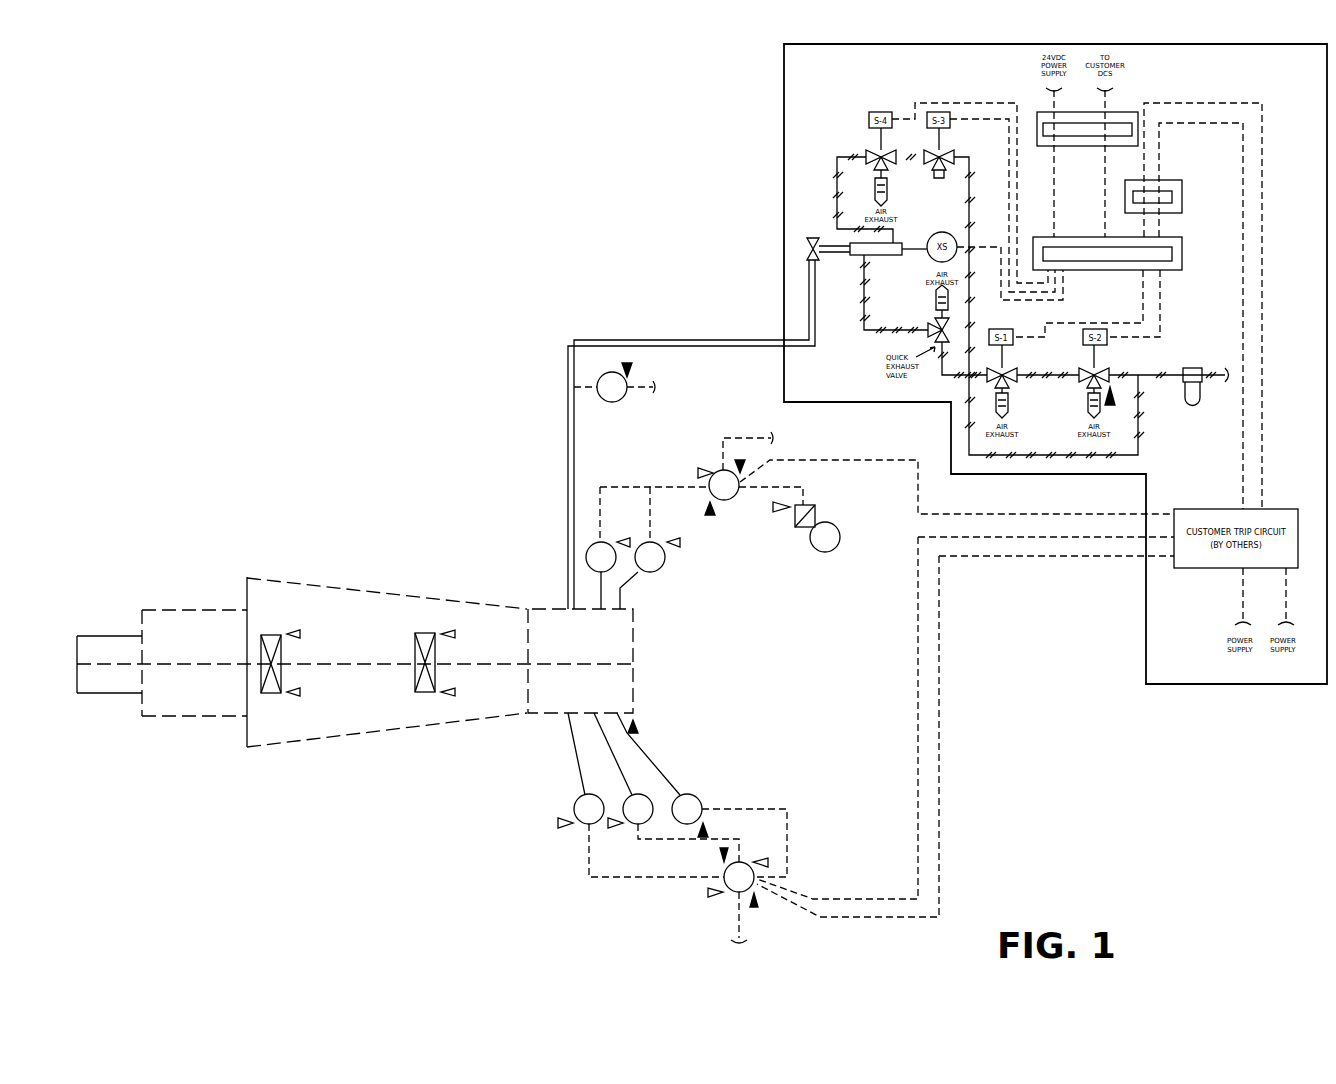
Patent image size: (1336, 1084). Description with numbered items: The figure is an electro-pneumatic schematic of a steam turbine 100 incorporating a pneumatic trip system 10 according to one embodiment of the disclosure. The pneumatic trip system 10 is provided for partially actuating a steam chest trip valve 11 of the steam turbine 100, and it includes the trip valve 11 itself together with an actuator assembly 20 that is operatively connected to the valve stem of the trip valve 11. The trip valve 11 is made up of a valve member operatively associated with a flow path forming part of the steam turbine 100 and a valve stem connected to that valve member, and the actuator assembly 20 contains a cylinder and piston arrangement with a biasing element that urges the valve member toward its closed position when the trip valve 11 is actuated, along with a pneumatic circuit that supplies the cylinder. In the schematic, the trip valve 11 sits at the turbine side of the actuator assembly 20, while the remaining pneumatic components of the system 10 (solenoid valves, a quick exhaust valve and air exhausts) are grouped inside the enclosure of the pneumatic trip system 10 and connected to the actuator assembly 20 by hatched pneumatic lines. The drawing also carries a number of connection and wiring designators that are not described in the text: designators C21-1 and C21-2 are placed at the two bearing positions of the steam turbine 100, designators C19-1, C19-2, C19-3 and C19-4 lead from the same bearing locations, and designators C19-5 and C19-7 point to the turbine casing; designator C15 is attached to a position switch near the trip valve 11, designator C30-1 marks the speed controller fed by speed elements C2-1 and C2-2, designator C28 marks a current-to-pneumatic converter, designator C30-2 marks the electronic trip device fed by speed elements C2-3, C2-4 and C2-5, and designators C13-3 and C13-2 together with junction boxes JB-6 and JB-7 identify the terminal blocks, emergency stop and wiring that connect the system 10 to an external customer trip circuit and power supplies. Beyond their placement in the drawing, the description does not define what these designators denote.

The pneumatic trip system 10 is at (784, 72).
The actuator assembly 20 is at (850, 245).
The trip valve 11 is at (812, 236).
The steam turbine 100 is at (388, 593).
The bearing vibration sensor connection C21-1 is at (427, 633).
The bearing vibration sensor connection C21-2 is at (270, 635).
The bearing temperature sensor connection C19-1 is at (426, 692).
The bearing temperature sensor connection C19-2 is at (423, 692).
The bearing temperature sensor connection C19-3 is at (275, 693).
The bearing temperature sensor connection C19-4 is at (268, 693).
The turbine casing sensor connection C19-5 is at (635, 695).
The turbine casing sensor connection C19-7 is at (668, 754).
The valve position switch connection C15 is at (627, 383).
The speed indicating controller connection C30-1 is at (723, 472).
The speed element connection C2-1 is at (600, 543).
The speed element connection C2-2 is at (650, 543).
The speed element connection C2-3 is at (589, 825).
The speed element connection C2-4 is at (638, 825).
The speed element connection C2-5 is at (703, 813).
The current-to-pneumatic converter connection C28 is at (805, 505).
The electronic trip connection C30-2 is at (735, 892).
The terminal block connection C13-3 is at (1120, 112).
The emergency stop connection C13-2 is at (1165, 180).
The junction box JB-6 is at (1132, 112).
The junction box JB-7 is at (1182, 263).